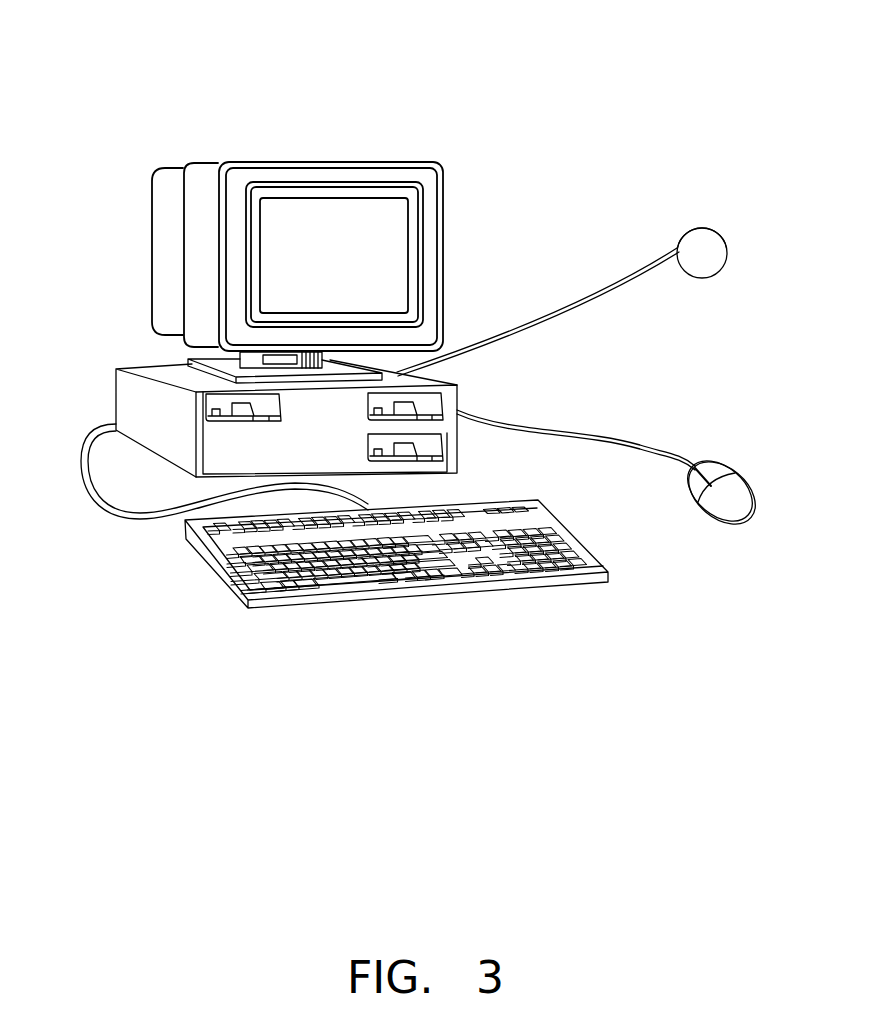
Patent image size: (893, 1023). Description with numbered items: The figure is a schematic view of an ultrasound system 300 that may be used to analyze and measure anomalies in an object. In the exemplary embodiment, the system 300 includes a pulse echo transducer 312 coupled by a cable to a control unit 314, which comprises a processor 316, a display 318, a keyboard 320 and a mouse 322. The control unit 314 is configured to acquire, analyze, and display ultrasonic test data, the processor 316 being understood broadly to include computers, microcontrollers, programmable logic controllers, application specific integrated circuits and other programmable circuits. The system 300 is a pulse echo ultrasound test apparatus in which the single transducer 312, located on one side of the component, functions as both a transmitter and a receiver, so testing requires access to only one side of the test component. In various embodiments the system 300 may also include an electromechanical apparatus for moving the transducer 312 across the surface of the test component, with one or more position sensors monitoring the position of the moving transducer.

The ultrasound system 300 is at (528, 130).
The pulse echo transducer 312 is at (717, 278).
The control unit 314 is at (300, 98).
The processor 316 is at (212, 413).
The display 318 is at (207, 287).
The keyboard 320 is at (267, 610).
The mouse 322 is at (737, 530).